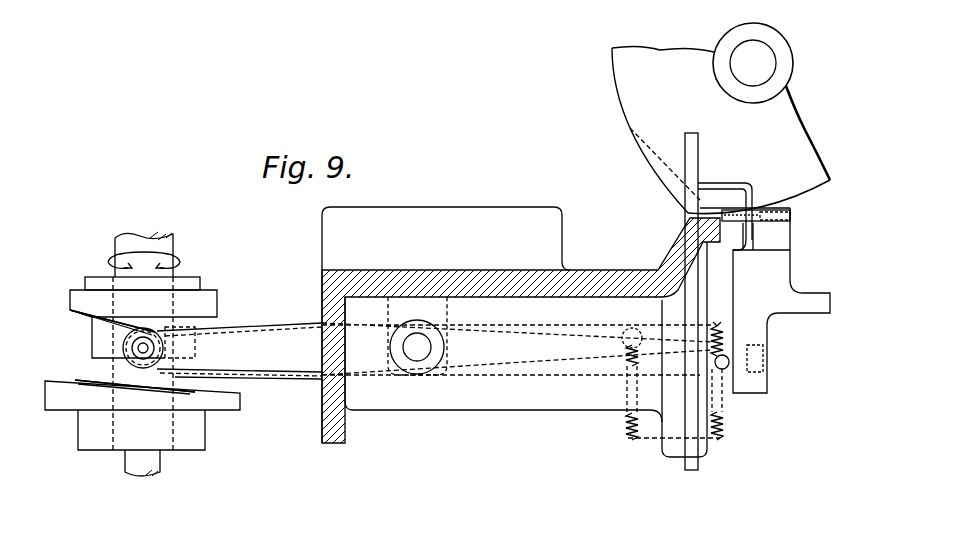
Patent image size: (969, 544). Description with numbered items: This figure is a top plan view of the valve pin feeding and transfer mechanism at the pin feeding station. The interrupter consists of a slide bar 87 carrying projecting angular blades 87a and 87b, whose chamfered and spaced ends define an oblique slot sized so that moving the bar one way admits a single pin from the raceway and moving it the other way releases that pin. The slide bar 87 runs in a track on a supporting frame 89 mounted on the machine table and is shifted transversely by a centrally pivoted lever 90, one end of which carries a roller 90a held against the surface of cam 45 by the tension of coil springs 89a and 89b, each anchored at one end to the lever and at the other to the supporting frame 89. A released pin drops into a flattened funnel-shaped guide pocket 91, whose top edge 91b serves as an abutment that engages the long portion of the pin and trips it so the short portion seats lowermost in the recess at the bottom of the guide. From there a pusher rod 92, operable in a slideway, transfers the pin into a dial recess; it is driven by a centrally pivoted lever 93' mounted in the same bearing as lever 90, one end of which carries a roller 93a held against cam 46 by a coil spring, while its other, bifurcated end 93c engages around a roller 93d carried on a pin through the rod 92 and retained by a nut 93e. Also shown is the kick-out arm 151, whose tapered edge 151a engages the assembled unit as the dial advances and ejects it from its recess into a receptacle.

The cam 45 is at (135, 327).
The cam 46 is at (192, 385).
The slide bar 87 is at (692, 140).
The angular blade 87a is at (740, 186).
The angular blade 87b is at (753, 246).
The supporting frame 89 is at (672, 266).
The coil spring 89a is at (722, 432).
The coil spring 89b is at (628, 432).
The centrally pivoted lever 90 is at (262, 330).
The roller 90a is at (135, 330).
The funnel-shaped guide pocket 91 is at (760, 226).
The top edge 91b is at (772, 216).
The pusher rod 92 is at (745, 310).
The centrally pivoted lever 93' is at (241, 392).
The roller 93a is at (140, 373).
The bifurcated end 93c is at (722, 380).
The roller 93d is at (728, 364).
The nut 93e is at (765, 358).
The kick-out arm 151 is at (648, 146).
The tapered edge 151a is at (628, 134).